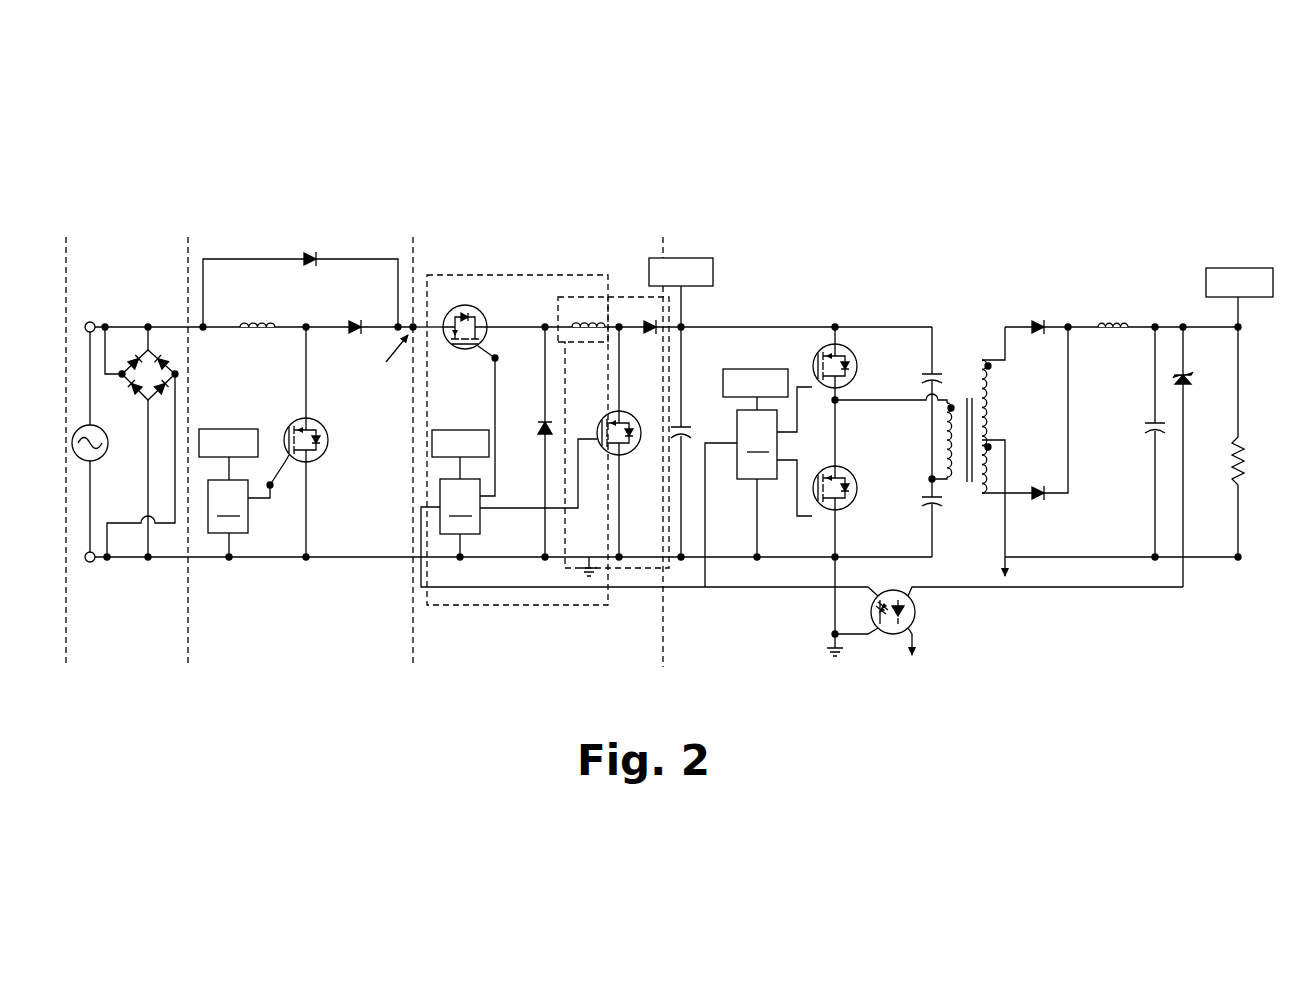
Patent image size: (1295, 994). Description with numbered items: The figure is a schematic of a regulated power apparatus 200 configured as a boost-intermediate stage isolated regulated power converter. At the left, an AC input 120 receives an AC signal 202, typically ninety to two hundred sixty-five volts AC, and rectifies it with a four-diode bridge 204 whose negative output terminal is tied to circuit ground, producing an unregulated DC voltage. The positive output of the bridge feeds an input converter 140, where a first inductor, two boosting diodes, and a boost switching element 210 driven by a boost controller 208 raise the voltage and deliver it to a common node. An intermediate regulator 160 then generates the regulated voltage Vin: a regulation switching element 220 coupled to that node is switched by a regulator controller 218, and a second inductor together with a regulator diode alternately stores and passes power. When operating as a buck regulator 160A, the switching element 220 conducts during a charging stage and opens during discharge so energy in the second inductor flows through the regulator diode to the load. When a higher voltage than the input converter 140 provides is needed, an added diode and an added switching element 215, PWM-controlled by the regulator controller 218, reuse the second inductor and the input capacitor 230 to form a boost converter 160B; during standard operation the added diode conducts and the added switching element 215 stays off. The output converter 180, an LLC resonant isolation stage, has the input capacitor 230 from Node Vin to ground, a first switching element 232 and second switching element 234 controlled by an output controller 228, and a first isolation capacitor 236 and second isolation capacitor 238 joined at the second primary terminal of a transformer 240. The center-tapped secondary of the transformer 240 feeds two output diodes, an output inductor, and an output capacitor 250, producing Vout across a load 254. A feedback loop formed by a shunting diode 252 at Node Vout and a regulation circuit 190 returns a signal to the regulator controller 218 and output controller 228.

The AC input 120 is at (118, 249).
The input converter 140 is at (240, 249).
The intermediate regulator 160 is at (511, 231).
The buck regulator 160A is at (483, 275).
The boost converter 160B is at (637, 568).
The output converter 180 is at (896, 248).
The regulation circuit 190 is at (893, 637).
The regulated power apparatus 200 is at (1106, 84).
The AC signal 202 is at (99, 461).
The four-diode bridge 204 is at (134, 350).
The boost controller 208 is at (249, 518).
The boost switching element 210 is at (329, 455).
The switching element Q5 215 is at (605, 420).
The regulator controller 218 is at (481, 520).
The regulation switching element 220 is at (455, 350).
The output controller 228 is at (742, 482).
The input capacitor 230 is at (684, 412).
The first switching element 232 is at (858, 361).
The second switching element 234 is at (858, 487).
The first isolation capacitor 236 is at (941, 371).
The second isolation capacitor 238 is at (938, 508).
The transformer 240 is at (986, 334).
The output capacitor 250 is at (1146, 424).
The shunting diode 252 is at (1190, 388).
The load 254 is at (1230, 484).